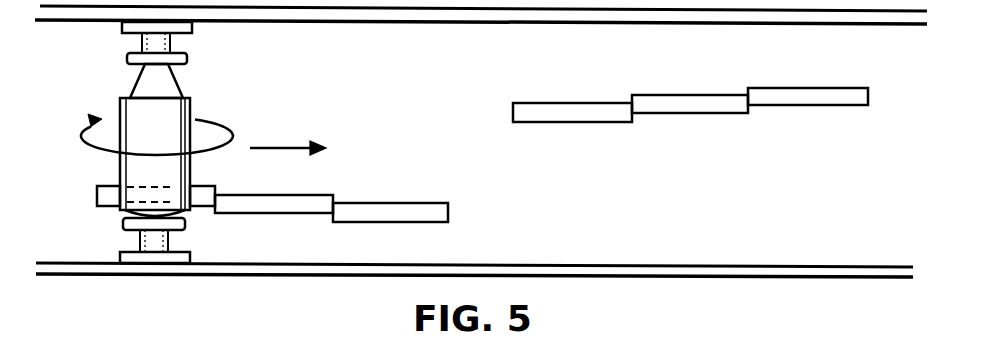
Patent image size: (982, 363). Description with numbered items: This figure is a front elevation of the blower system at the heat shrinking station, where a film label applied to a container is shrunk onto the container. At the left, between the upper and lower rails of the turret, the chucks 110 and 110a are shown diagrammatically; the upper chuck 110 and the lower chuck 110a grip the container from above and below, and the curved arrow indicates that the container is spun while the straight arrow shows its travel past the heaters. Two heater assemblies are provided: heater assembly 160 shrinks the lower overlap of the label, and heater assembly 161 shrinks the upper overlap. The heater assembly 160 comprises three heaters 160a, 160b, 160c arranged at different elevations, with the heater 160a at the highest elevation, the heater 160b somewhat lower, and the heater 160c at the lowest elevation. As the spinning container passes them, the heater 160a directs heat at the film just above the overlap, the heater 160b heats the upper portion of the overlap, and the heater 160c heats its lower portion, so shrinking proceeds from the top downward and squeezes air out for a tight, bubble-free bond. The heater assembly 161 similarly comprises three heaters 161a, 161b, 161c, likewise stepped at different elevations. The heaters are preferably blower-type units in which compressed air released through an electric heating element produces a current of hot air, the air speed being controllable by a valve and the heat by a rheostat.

The chuck 110 is at (192, 60).
The chuck 110a is at (190, 229).
The heater assembly 160 is at (283, 211).
The heater 160a is at (199, 190).
The heater 160b is at (274, 203).
The heater 160c is at (398, 212).
The heater assembly 161 is at (690, 107).
The heater 161a is at (580, 110).
The heater 161b is at (700, 103).
The heater 161c is at (823, 96).